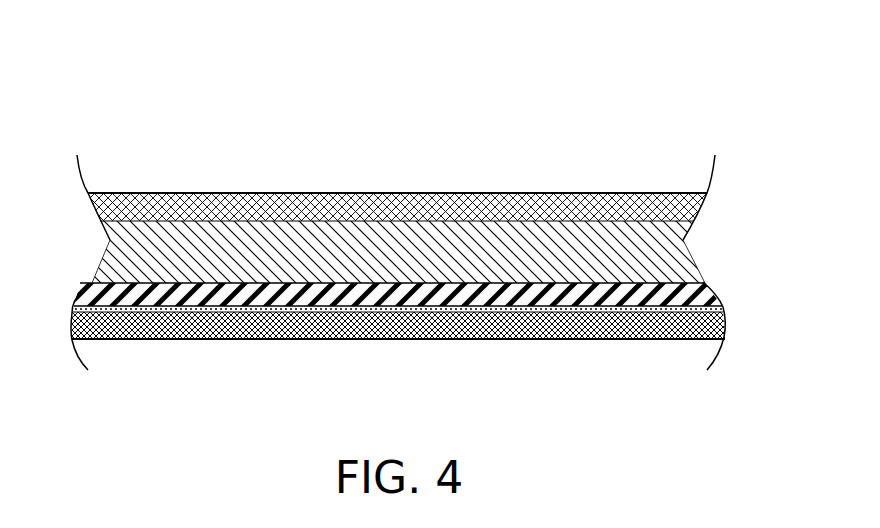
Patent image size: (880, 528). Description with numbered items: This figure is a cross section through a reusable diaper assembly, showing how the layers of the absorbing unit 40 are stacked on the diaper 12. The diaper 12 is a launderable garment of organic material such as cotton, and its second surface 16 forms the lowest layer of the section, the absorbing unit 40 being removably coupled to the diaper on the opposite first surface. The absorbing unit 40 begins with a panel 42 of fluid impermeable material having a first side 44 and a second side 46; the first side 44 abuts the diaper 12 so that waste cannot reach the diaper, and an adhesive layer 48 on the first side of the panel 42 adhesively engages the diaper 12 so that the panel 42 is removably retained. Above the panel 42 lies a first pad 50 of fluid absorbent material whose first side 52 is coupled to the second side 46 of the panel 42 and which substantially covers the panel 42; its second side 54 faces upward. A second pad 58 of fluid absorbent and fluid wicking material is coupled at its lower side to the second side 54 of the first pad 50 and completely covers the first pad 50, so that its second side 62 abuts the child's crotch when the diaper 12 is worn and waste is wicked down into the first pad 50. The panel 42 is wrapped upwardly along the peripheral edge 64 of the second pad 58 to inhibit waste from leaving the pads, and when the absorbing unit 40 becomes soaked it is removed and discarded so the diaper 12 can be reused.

The diaper 12 is at (198, 315).
The second surface 16 is at (203, 305).
The absorbing unit 40 is at (398, 224).
The panel 42 is at (613, 303).
The first side 44 is at (553, 307).
The second side 46 is at (593, 283).
The adhesive layer 48 is at (492, 313).
The first pad 50 is at (428, 284).
The first side 52 is at (277, 285).
The second side 54 is at (500, 212).
The second pad 58 is at (241, 178).
The second side 62 is at (316, 193).
The peripheral edge 64 is at (332, 220).